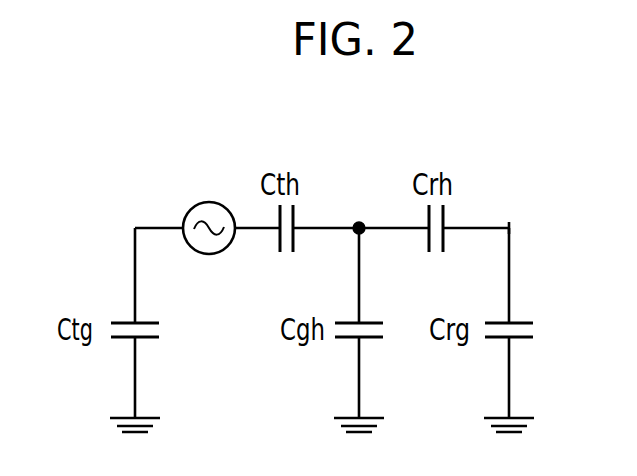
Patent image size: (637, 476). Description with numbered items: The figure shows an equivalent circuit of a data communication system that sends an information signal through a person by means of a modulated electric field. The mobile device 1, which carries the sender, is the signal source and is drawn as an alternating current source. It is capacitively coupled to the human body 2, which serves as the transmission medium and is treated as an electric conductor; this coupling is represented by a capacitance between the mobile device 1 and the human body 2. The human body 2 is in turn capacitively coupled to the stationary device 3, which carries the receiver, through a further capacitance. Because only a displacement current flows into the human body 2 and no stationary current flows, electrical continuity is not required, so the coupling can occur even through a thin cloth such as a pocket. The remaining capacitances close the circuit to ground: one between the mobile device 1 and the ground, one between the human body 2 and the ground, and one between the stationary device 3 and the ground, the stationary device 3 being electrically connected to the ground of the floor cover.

The mobile device 1 is at (187, 187).
The human body 2 is at (355, 211).
The stationary device 3 is at (508, 213).